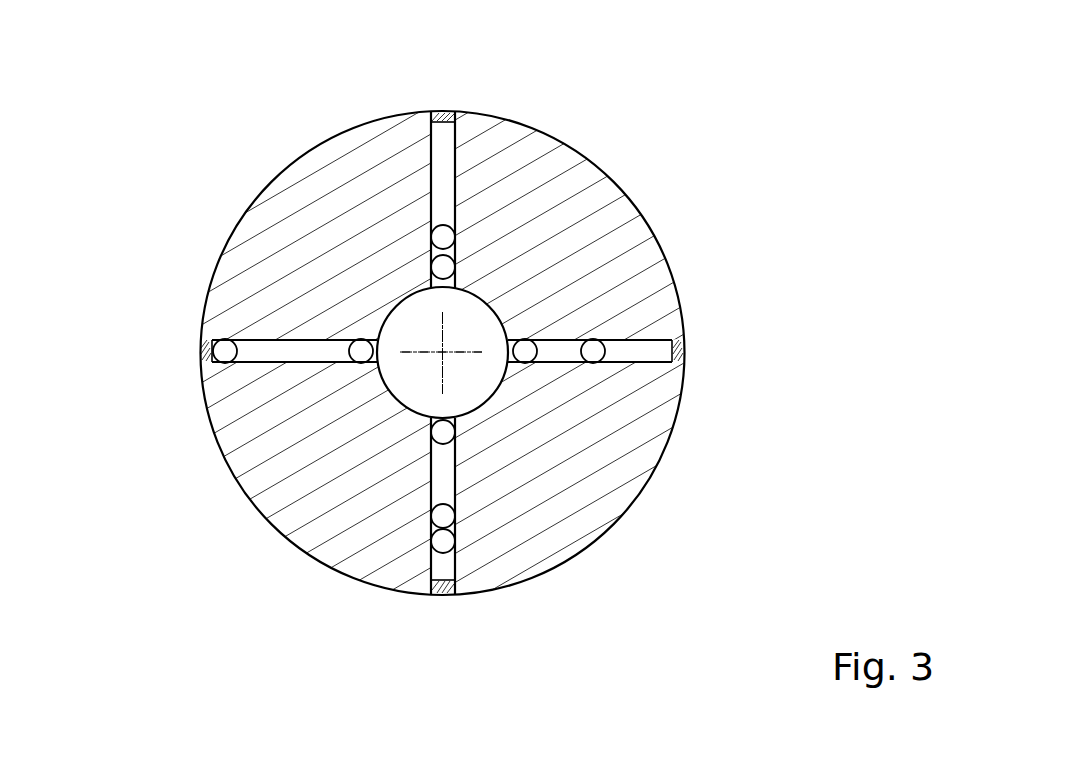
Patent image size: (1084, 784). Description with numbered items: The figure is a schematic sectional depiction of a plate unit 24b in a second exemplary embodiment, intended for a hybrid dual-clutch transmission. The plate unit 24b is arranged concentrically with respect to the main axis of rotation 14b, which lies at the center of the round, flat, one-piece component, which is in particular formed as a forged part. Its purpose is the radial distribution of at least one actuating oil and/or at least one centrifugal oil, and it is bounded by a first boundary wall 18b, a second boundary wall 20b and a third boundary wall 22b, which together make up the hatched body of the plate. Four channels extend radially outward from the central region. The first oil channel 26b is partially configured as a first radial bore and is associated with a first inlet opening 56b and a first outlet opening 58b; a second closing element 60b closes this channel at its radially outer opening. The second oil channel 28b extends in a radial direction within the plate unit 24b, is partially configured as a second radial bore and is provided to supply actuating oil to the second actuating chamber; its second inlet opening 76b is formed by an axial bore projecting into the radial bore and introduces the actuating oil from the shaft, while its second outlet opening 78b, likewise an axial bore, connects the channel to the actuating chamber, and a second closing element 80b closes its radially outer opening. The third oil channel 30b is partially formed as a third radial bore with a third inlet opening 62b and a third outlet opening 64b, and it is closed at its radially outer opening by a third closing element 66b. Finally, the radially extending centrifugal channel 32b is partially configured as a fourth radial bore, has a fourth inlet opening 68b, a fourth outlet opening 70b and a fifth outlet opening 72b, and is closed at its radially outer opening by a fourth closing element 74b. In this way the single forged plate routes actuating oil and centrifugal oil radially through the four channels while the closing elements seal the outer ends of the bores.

The main axis of rotation 14b is at (430, 368).
The first boundary wall 18b is at (543, 503).
The second boundary wall 20b is at (442, 352).
The third boundary wall 22b is at (442, 353).
The plate unit 24b is at (143, 131).
The first oil channel 26b is at (634, 352).
The second oil channel 28b is at (440, 162).
The third oil channel 30b is at (274, 352).
The centrifugal channel 32b is at (444, 489).
The first inlet opening 56b is at (525, 351).
The first outlet opening 58b is at (596, 351).
The second closing element 60b is at (682, 353).
The third inlet opening 62b is at (335, 352).
The third outlet opening 64b is at (226, 352).
The third closing element 66b is at (204, 351).
The fourth inlet opening 68b is at (439, 431).
The fourth outlet opening 70b is at (439, 515).
The fifth outlet opening 72b is at (439, 540).
The fourth closing element 74b is at (441, 596).
The second inlet opening 76b is at (441, 267).
The second outlet opening 78b is at (441, 237).
The second closing element 80b is at (439, 114).